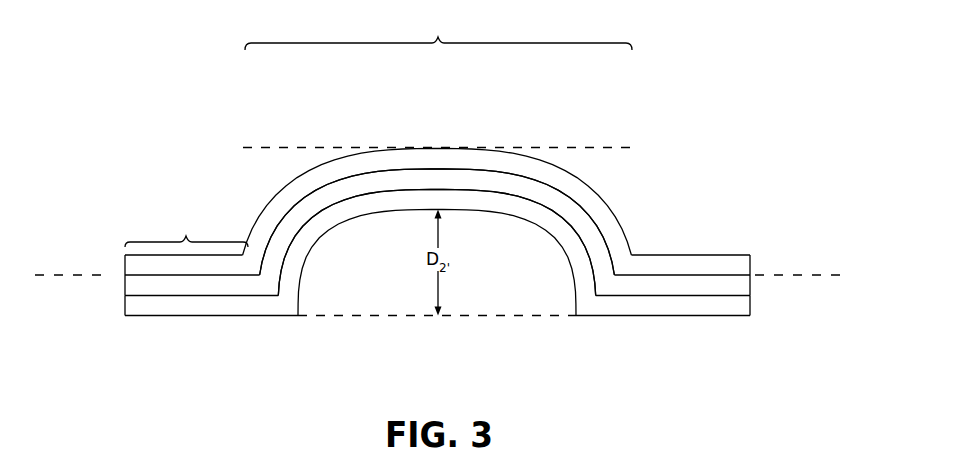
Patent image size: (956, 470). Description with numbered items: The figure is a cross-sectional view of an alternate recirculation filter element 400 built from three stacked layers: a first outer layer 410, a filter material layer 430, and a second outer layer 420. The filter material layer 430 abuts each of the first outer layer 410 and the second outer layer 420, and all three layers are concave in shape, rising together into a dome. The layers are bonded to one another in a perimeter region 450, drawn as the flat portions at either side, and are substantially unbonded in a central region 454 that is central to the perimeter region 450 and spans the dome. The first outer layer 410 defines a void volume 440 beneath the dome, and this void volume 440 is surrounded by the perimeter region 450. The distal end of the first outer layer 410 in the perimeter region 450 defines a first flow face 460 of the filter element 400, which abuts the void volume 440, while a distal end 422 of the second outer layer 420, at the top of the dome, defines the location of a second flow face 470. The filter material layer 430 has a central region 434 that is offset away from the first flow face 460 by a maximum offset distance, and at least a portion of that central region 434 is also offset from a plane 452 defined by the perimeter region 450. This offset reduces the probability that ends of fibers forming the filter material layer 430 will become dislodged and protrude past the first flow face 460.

The filter element 400 is at (186, 123).
The first outer layer 410 is at (742, 305).
The second outer layer 420 is at (707, 263).
The distal end 422 is at (438, 147).
The filter material layer 430 is at (742, 288).
The central region 434 is at (411, 177).
The void volume 440 is at (498, 292).
The perimeter region 450 is at (186, 229).
The plane 452 is at (62, 255).
The central region 454 is at (438, 32).
The first flow face 460 is at (373, 317).
The second flow face 470 is at (608, 147).